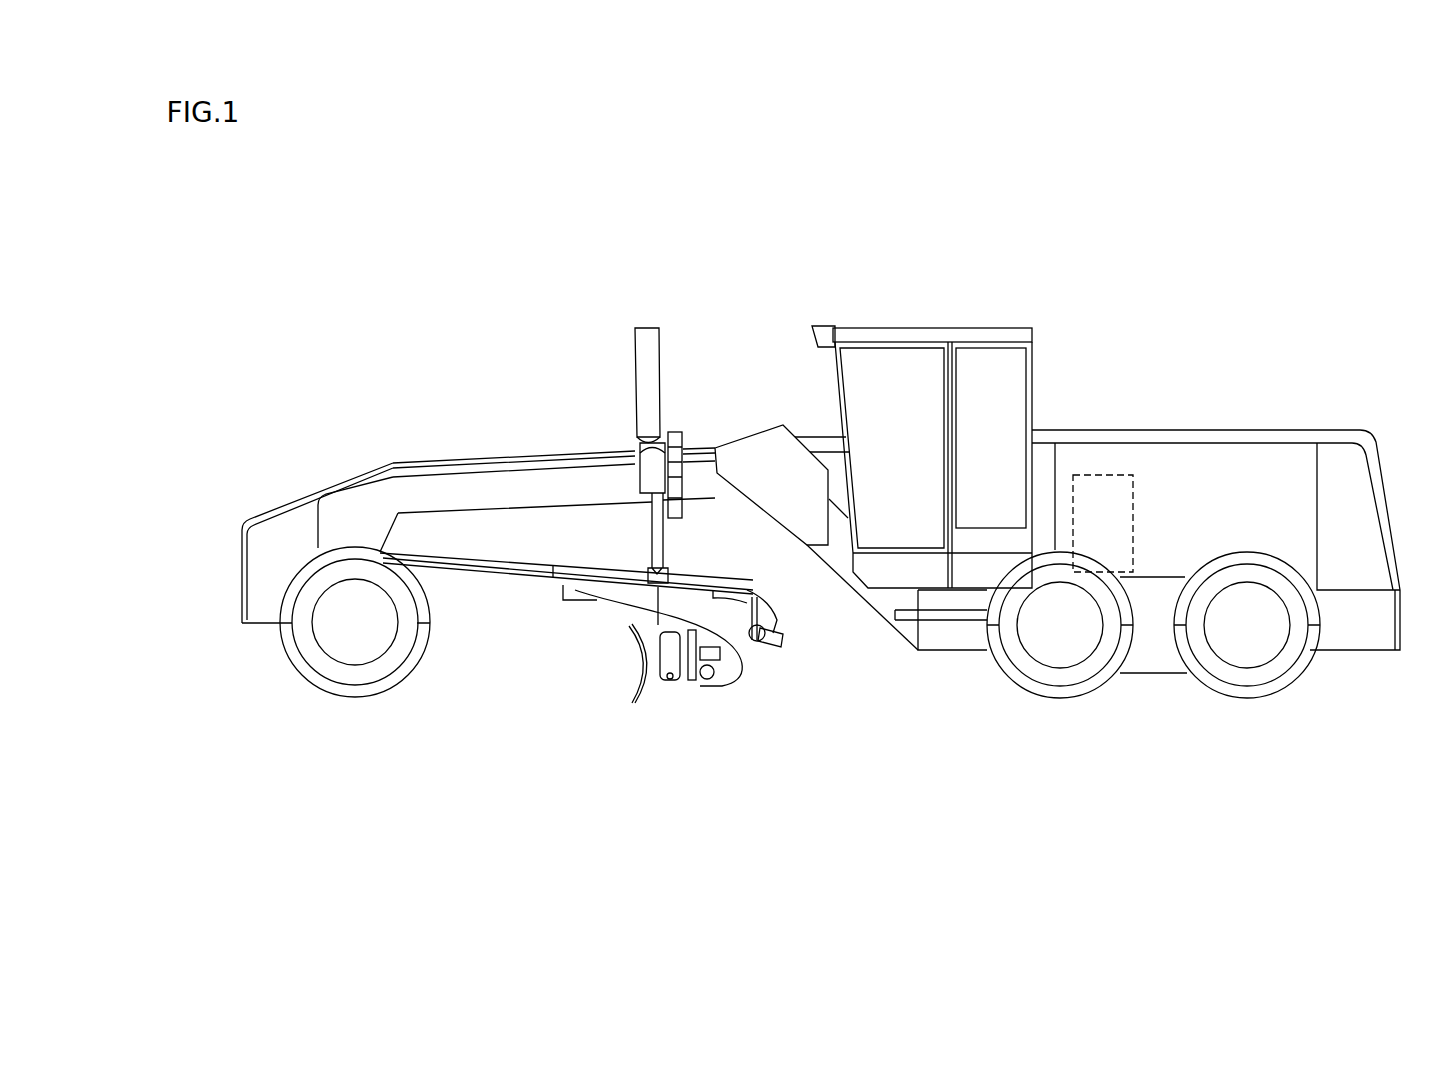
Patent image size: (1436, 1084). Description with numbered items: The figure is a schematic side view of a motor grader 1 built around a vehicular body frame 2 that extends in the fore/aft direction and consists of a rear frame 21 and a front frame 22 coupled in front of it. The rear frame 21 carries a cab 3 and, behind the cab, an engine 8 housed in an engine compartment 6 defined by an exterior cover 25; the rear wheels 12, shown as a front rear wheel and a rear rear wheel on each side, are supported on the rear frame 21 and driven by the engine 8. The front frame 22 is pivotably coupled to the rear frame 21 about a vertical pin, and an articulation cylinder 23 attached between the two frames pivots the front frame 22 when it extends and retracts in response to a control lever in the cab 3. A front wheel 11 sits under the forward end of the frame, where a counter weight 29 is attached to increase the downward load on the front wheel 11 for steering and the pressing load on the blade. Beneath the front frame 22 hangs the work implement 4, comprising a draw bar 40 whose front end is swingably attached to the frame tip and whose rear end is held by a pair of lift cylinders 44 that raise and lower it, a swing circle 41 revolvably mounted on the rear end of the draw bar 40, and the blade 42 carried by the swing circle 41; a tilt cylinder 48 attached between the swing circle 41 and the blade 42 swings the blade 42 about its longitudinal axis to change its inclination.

The motor grader 1 is at (475, 292).
The vehicular body frame 2 is at (768, 400).
The cab 3 is at (974, 330).
The work implement 4 is at (620, 702).
The engine compartment 6 is at (1175, 480).
The engine 8 is at (1103, 475).
The front wheel 11 is at (357, 676).
The rear wheel 12 is at (1059, 678).
The rear frame 21 is at (943, 652).
The front frame 22 is at (555, 483).
The articulation cylinder 23 is at (963, 623).
The exterior cover 25 is at (1246, 430).
The counter weight 29 is at (265, 570).
The draw bar 40 is at (487, 580).
The swing circle 41 is at (573, 600).
The blade 42 is at (650, 665).
The lift cylinder 44 is at (652, 350).
The tilt cylinder 48 is at (775, 650).